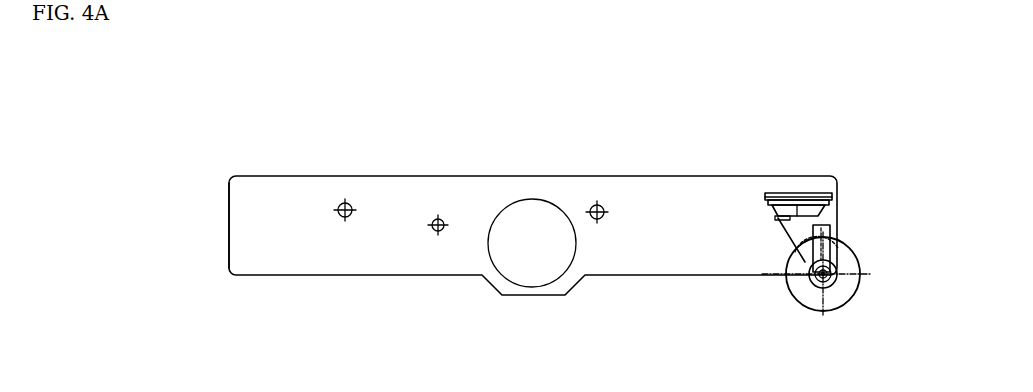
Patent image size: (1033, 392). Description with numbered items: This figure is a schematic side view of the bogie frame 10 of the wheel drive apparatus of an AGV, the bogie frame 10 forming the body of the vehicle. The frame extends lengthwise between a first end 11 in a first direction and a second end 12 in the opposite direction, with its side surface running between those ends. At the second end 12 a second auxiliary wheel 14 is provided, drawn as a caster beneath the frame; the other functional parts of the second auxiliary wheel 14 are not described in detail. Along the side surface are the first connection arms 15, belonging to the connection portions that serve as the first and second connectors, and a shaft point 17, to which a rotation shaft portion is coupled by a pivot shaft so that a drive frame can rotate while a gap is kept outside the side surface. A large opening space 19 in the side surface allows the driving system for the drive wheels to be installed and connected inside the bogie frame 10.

The bogie frame 10 is at (303, 237).
The first end 11 is at (229, 236).
The second end 12 is at (835, 228).
The second auxiliary wheel 14 is at (818, 248).
The first connection arm 15 is at (350, 206).
The shaft point 17 is at (442, 219).
The opening space 19 is at (510, 262).